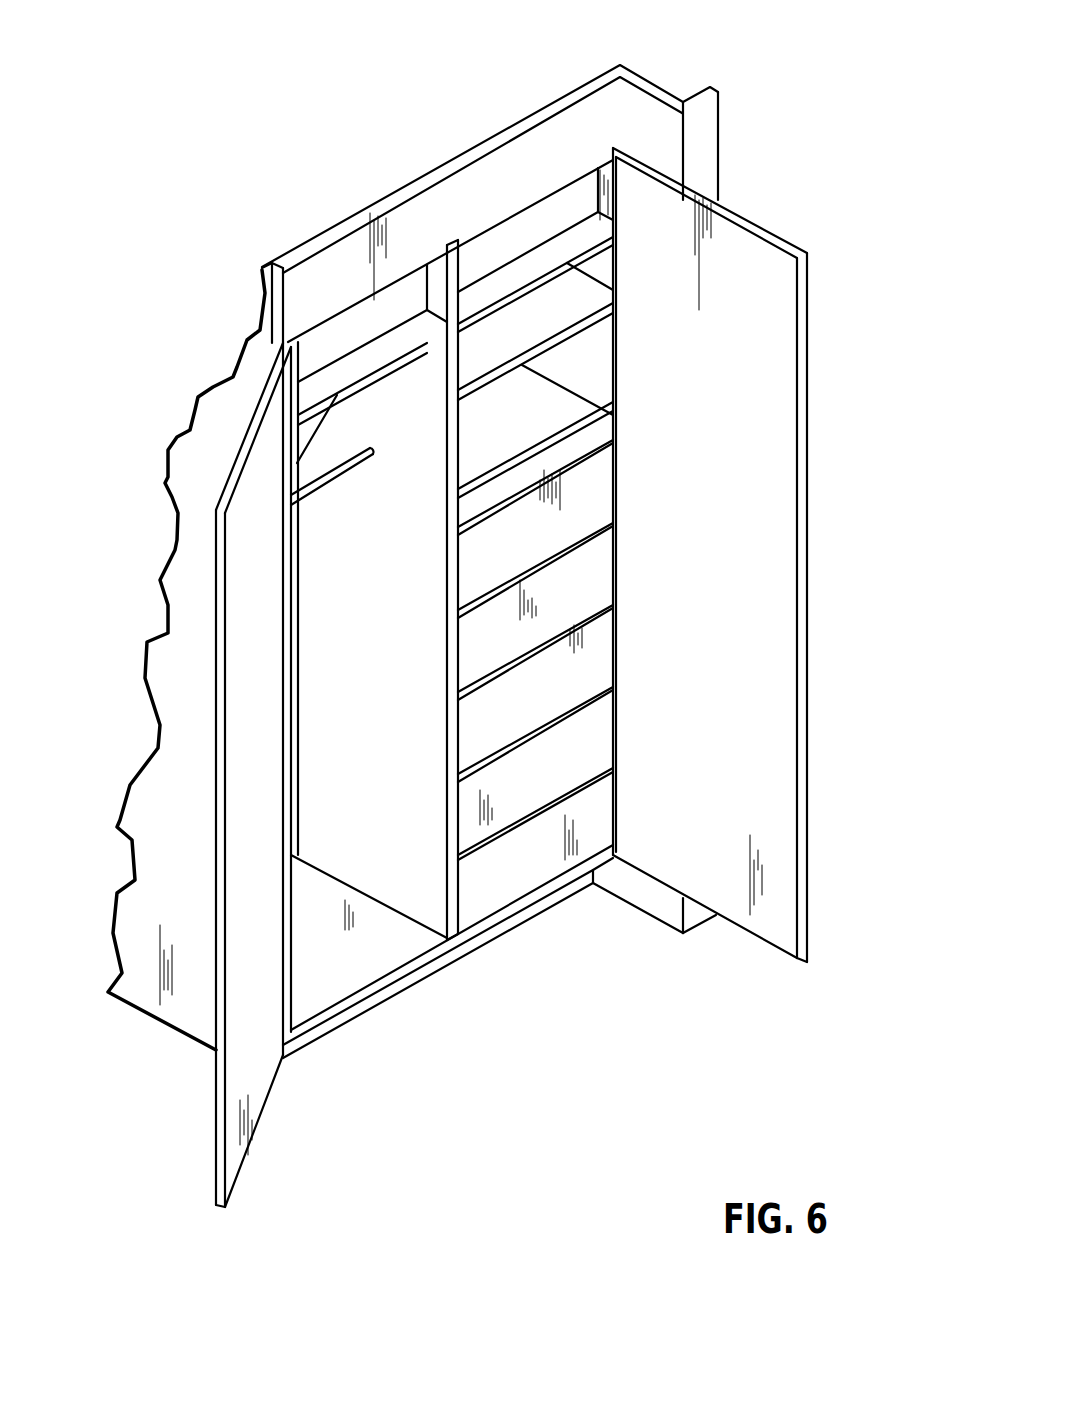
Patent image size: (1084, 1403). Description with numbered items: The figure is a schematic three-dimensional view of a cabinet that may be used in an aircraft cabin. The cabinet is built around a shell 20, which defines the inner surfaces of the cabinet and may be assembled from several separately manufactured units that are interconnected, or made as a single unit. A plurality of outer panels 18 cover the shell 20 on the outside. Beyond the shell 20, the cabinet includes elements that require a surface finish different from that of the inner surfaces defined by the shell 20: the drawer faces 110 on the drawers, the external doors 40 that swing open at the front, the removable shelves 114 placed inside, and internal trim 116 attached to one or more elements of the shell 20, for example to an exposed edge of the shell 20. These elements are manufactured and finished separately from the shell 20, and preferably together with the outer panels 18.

The outer panels 18 is at (707, 115).
The shell 20 is at (437, 278).
The external doors 40 is at (740, 212).
The drawer faces 110 is at (590, 733).
The removable shelves 114 is at (587, 293).
The internal trim 116 is at (603, 427).